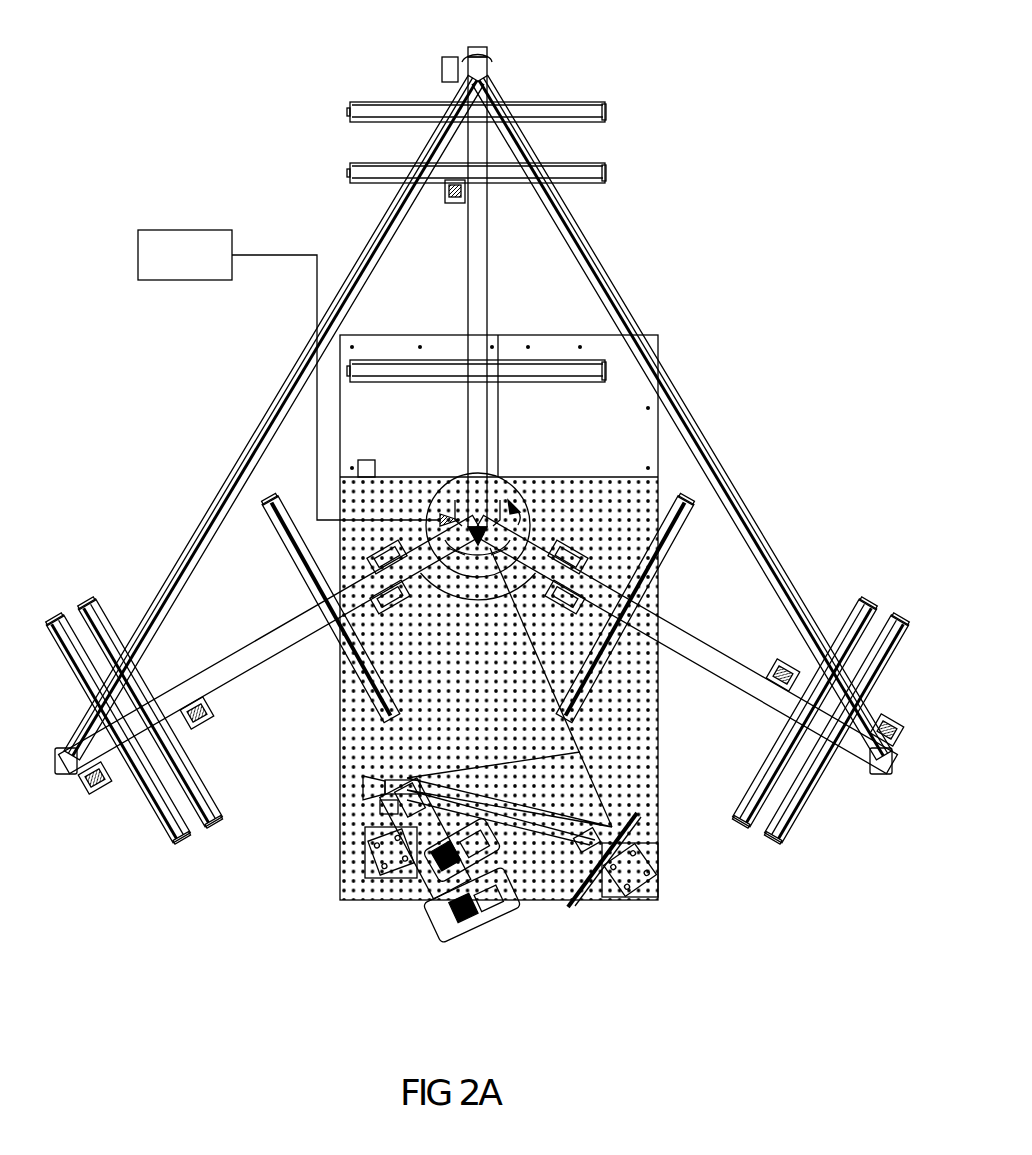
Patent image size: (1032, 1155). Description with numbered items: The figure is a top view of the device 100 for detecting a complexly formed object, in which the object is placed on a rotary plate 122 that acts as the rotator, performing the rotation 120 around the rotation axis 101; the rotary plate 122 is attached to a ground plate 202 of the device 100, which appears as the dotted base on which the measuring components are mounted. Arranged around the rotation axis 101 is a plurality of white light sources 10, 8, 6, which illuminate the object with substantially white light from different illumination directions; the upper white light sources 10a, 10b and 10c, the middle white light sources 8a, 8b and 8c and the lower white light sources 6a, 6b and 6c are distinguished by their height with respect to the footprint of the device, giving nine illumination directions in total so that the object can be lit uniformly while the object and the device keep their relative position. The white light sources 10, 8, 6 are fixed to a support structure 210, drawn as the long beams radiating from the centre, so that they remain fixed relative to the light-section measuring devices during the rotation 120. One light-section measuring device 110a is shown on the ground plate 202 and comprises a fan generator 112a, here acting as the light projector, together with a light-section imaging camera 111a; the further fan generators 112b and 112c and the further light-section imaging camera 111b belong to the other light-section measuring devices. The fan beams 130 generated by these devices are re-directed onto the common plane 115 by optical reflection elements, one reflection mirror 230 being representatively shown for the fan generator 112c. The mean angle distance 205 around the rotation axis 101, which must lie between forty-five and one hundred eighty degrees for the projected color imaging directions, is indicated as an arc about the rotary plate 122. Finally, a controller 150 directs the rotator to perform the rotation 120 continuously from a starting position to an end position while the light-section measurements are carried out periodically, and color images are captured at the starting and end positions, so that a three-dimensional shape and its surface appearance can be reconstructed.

The device 100 is at (167, 37).
The middle white light source 8c is at (562, 102).
The lower white light source 6c is at (606, 173).
The upper white light source 10c is at (546, 360).
The support structure 210 is at (478, 408).
The ground plate 202 is at (553, 882).
The controller 150 is at (138, 258).
The rotary plate 122 is at (462, 488).
The rotation axis 101 is at (512, 497).
The rotation 120 is at (538, 520).
The mean angle distance 205 is at (478, 600).
The white light sources 10 is at (272, 486).
The upper white light source 10a is at (300, 568).
The upper white light source 10b is at (676, 515).
The white light sources 8 is at (52, 603).
The middle white light source 8a is at (152, 806).
The middle white light source 8b is at (806, 808).
The white light sources 6 is at (210, 842).
The lower white light source 6a is at (196, 767).
The lower white light source 6b is at (860, 598).
The common plane 115 is at (572, 726).
The fan beams 130 is at (580, 792).
The reflection mirror 230 is at (588, 890).
The upper light-section measuring device 110a is at (455, 973).
The fan generator 112a is at (372, 773).
The fan generator 112b is at (377, 790).
The fan generator 112c is at (380, 810).
The light-section imaging camera 111a is at (434, 862).
The light-section imaging camera 111b is at (468, 912).